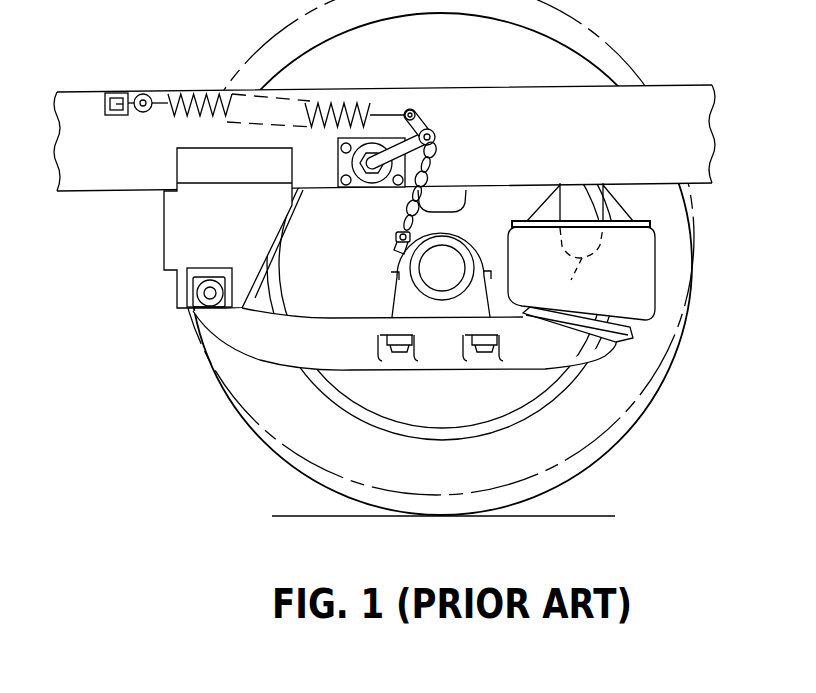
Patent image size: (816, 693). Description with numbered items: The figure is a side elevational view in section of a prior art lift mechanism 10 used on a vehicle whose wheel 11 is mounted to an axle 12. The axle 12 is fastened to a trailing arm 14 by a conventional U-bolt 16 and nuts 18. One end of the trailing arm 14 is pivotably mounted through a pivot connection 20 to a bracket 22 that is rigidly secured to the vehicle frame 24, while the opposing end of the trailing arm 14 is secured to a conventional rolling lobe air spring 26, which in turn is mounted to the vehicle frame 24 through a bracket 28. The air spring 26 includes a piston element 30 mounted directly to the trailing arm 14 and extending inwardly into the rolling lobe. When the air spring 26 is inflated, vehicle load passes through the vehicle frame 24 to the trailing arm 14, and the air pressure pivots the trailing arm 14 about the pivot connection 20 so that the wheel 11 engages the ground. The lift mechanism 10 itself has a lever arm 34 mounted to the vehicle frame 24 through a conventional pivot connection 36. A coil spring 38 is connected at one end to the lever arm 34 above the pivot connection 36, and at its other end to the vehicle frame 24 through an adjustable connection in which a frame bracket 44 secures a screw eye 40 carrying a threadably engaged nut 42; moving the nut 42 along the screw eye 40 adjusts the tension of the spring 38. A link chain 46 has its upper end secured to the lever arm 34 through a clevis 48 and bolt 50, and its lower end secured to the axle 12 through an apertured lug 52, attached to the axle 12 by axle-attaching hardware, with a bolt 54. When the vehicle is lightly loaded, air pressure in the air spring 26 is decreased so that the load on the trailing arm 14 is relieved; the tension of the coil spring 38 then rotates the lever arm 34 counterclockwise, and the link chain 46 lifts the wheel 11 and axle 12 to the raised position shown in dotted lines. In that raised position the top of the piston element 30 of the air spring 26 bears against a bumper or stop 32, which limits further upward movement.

The lift mechanism 10 is at (391, 72).
The wheel 11 is at (615, 447).
The axle 12 is at (453, 234).
The trailing arm 14 is at (295, 353).
The U-bolt 16 is at (475, 240).
The nuts 18 is at (397, 353).
The pivot connection 20 is at (193, 311).
The bracket 22 is at (187, 222).
The vehicle frame 24 is at (673, 84).
The air spring 26 is at (657, 237).
The bracket 28 is at (615, 183).
The piston element 30 is at (590, 322).
The bumper or stop 32 is at (579, 264).
The lever arm 34 is at (415, 110).
The pivot connection 36 is at (368, 173).
The coil spring 38 is at (335, 100).
The screw eye 40 is at (145, 114).
The nut 42 is at (125, 92).
The frame bracket 44 is at (122, 118).
The link chain 46 is at (440, 167).
The clevis 48 is at (440, 125).
The bolt 50 is at (436, 134).
The apertured lug 52 is at (394, 249).
The bolt 54 is at (392, 238).